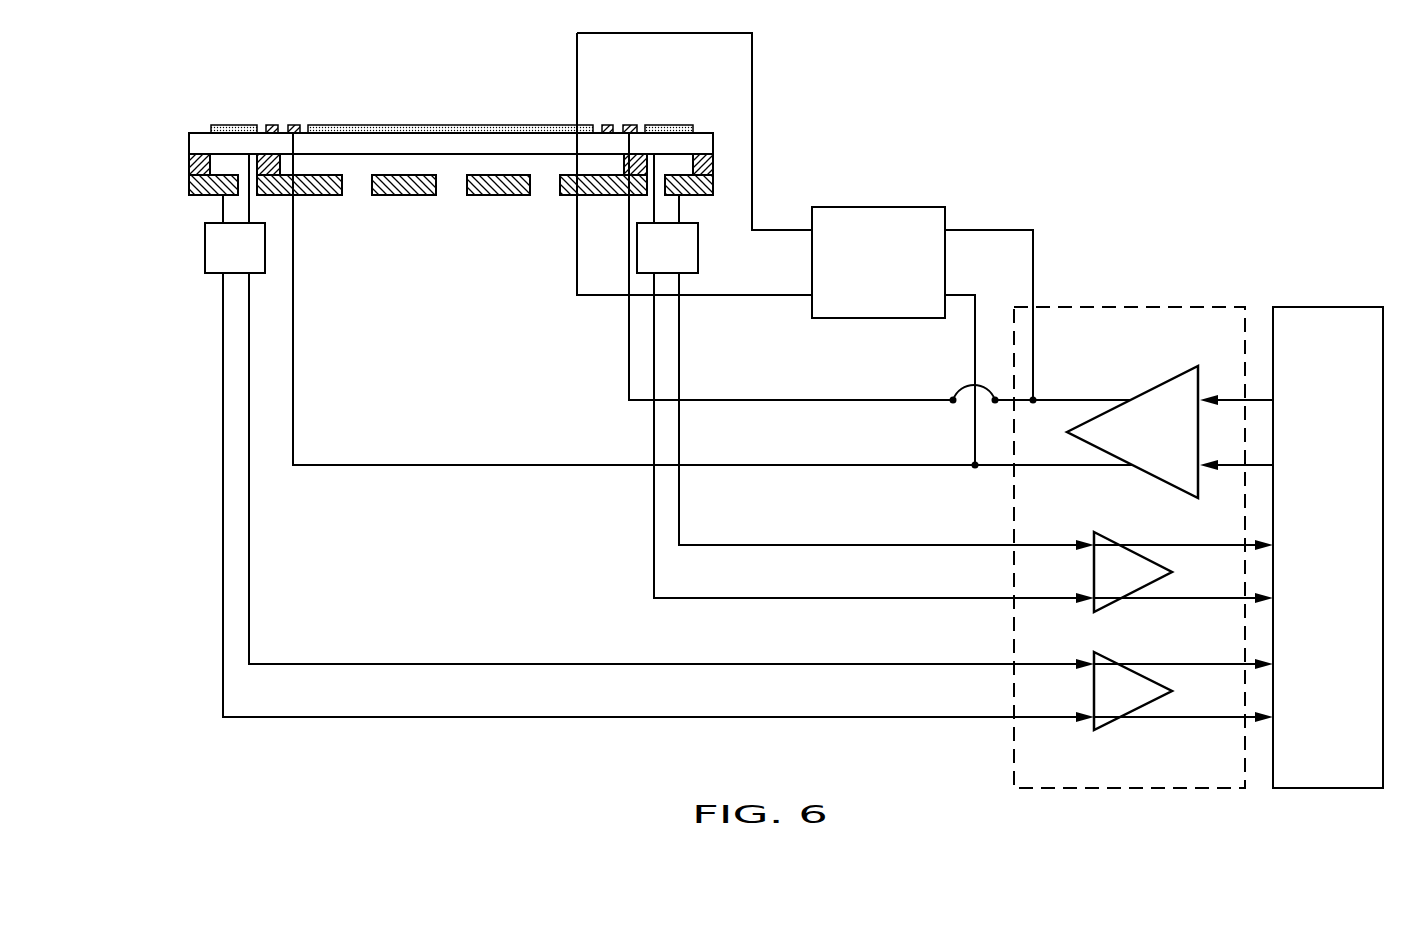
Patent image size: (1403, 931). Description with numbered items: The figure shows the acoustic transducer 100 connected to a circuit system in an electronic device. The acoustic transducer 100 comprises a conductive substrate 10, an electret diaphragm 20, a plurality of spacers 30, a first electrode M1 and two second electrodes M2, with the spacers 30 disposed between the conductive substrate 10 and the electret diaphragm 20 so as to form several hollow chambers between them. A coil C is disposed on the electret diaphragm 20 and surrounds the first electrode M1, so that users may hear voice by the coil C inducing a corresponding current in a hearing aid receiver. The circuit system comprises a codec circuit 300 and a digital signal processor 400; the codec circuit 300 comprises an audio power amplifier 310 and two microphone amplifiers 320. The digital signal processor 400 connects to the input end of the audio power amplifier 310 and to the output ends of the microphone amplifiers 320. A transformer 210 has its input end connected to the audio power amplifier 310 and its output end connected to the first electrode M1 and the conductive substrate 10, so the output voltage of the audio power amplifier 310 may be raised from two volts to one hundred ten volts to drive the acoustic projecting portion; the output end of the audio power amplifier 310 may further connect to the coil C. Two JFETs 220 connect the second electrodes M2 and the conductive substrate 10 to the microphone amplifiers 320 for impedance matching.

The acoustic transducer 100 is at (409, 161).
The electret diaphragm 20 is at (189, 143).
The spacers 30 is at (189, 166).
The conductive substrate 10 is at (189, 188).
The first electrode M1 is at (450, 125).
The second electrodes M2 is at (235, 125).
The coil C is at (293, 125).
The JFETs 220 is at (205, 256).
The transformer 210 is at (878, 207).
The codec circuit 300 is at (1200, 307).
The audio power amplifier 310 is at (1160, 386).
The microphone amplifiers 320 is at (1105, 533).
The digital signal processor 400 is at (1330, 307).